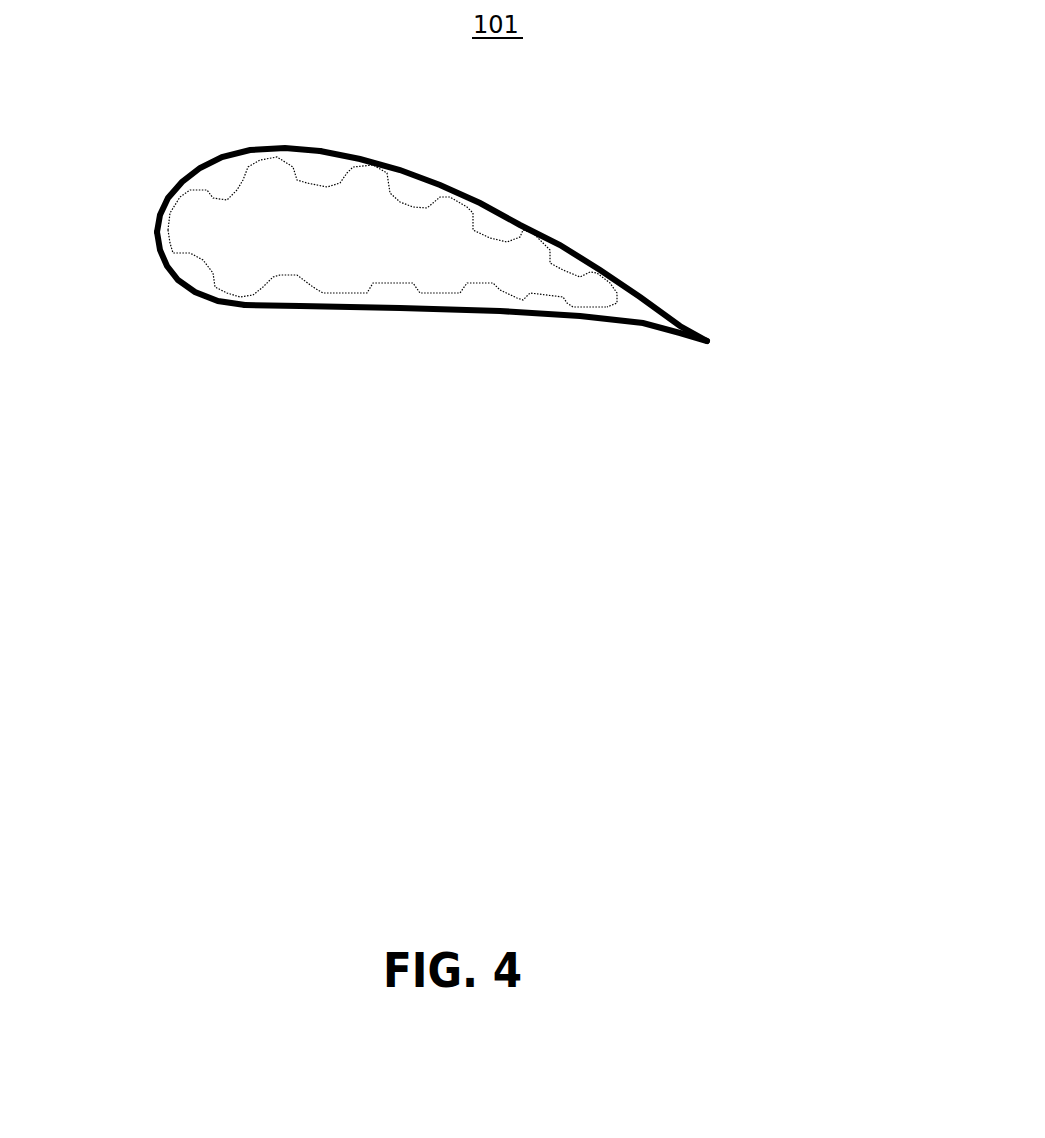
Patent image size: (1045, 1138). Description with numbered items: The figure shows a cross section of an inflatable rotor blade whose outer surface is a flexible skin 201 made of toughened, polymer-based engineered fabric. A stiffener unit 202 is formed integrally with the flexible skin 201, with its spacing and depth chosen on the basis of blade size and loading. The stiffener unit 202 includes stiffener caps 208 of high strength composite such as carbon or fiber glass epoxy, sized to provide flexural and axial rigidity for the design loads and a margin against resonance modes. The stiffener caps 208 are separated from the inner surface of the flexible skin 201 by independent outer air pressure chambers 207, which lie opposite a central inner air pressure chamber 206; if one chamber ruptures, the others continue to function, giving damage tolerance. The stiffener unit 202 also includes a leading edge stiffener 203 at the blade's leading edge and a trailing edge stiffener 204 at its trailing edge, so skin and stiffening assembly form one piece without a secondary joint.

The flexible skin 201 is at (210, 167).
The stiffener unit 202 is at (432, 198).
The leading edge stiffener 203 is at (170, 243).
The trailing edge stiffener 204 is at (643, 313).
The inner air pressure chamber 206 is at (413, 251).
The outer air pressure chambers 207 is at (470, 295).
The stiffener caps 208 is at (320, 183).